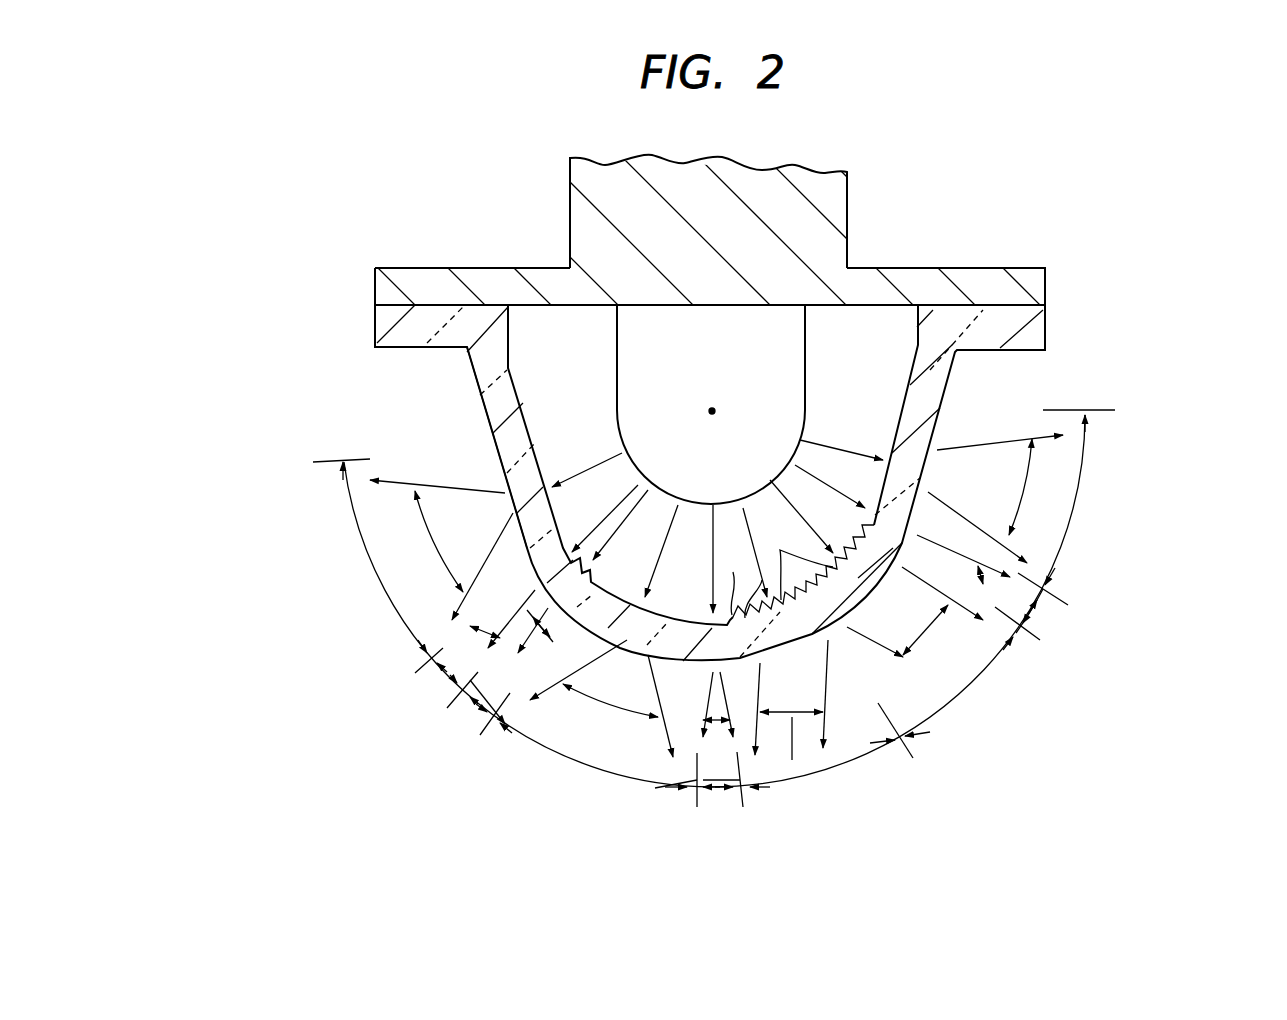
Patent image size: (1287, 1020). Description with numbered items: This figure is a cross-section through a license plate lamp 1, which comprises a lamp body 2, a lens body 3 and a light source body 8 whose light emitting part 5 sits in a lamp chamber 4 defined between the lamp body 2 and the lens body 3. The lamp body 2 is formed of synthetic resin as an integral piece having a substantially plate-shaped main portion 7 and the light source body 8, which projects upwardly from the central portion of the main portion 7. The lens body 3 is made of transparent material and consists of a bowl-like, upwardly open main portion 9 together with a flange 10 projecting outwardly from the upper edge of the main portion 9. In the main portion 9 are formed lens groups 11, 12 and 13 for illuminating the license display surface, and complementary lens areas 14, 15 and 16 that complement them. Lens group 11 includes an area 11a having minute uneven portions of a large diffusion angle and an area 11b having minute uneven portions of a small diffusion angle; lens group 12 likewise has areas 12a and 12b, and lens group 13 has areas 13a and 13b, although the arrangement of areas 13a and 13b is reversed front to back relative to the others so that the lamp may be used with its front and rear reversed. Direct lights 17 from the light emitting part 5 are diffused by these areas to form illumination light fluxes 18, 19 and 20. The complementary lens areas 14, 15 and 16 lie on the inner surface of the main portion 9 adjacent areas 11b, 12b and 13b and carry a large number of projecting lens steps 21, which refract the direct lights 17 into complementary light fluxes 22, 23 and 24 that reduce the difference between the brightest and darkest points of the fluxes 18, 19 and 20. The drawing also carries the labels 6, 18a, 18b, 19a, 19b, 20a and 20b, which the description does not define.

The license plate lamp 1 is at (1168, 236).
The lamp body 2 is at (847, 212).
The lens body 3 is at (955, 369).
The lamp chamber 4 is at (564, 354).
The light emitting part 5 is at (712, 407).
The cavity wall 6 is at (805, 357).
The main portion 7 is at (1027, 268).
The light source body 8 is at (570, 200).
The main portion 9 is at (480, 385).
The flange 10 is at (1045, 328).
The lens group 11 is at (720, 856).
The area having minute uneven portions of a large diffusion angle 11a is at (655, 788).
The area having minute uneven portions of a small diffusion angle 11b is at (717, 790).
The lens group 12 is at (272, 660).
The area having minute uneven portions of a large diffusion angle 12a is at (413, 632).
The area having minute uneven portions of a small diffusion angle 12b is at (440, 673).
The lens group 13 is at (1208, 583).
The area having minute uneven portions of a large diffusion angle 13a is at (1060, 563).
The area having minute uneven portions of a small diffusion angle 13b is at (1033, 612).
The complementary lens area 14 is at (848, 768).
The complementary lens area 15 is at (475, 713).
The complementary lens area 16 is at (947, 710).
The direct lights 17 is at (602, 497).
The illumination light flux 18 is at (593, 818).
The first lower angle portion 18a is at (570, 747).
The second lower angle portion 18b is at (717, 723).
The illumination light flux 19 is at (232, 562).
The first left emission angle portion 19a is at (430, 535).
The second left emission angle portion 19b is at (530, 590).
The illumination light flux 20 is at (1198, 468).
The first right emission angle portion 20a is at (1023, 497).
The second right emission angle portion 20b is at (985, 570).
The lens steps 21 is at (595, 572).
The complementary light flux 22 is at (792, 720).
The complementary light flux 23 is at (537, 643).
The complementary light flux 24 is at (926, 630).